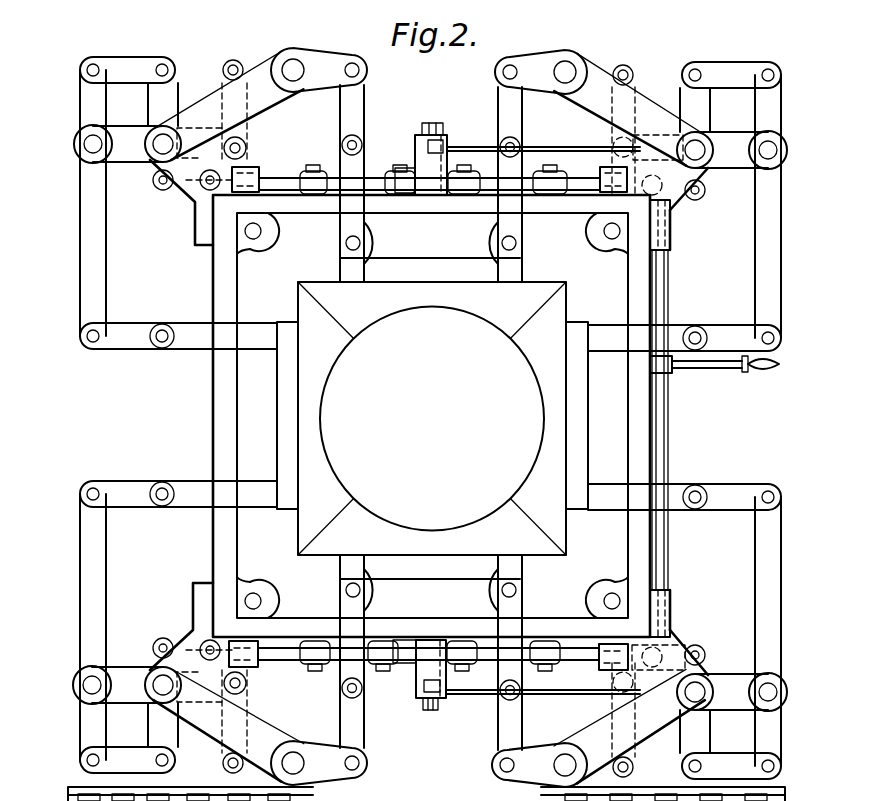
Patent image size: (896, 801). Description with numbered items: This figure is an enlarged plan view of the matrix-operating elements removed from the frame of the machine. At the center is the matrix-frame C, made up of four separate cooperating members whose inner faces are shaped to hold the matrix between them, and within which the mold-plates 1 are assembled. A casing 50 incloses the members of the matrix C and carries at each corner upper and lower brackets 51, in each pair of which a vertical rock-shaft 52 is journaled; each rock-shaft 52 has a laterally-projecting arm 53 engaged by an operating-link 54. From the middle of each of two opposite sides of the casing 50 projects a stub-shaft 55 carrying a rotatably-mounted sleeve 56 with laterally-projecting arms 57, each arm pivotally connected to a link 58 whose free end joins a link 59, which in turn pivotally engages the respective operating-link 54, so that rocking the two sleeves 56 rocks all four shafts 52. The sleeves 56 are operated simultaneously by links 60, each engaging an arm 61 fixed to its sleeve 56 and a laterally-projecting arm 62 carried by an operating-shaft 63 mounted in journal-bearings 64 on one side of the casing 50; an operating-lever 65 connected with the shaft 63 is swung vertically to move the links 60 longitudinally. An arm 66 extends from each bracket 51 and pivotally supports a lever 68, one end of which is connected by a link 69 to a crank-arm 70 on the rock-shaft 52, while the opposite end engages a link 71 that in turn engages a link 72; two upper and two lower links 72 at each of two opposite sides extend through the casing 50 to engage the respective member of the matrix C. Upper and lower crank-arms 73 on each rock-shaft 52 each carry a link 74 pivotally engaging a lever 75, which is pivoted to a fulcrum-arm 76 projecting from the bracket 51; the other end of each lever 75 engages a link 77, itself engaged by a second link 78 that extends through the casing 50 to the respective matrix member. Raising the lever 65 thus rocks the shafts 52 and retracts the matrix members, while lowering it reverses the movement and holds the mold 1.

The mold-plate 1 is at (432, 418).
The casing 50 is at (640, 447).
The bracket 51 is at (205, 178).
The rock-shaft 52 is at (186, 690).
The laterally-projecting arm 53 is at (160, 191).
The operating-link 54 is at (86, 145).
The stub-shaft 55 is at (449, 712).
The sleeve 56 is at (428, 160).
The laterally-projecting arm 57 is at (407, 183).
The link 58 is at (338, 197).
The link 59 is at (287, 177).
The link 60 is at (470, 147).
The arm 61 is at (430, 712).
The laterally-projecting arm 62 is at (657, 137).
The operating-shaft 63 is at (668, 462).
The journal-bearing 64 is at (671, 234).
The operating-lever 65 is at (716, 369).
The arm 66 is at (274, 718).
The lever 68 is at (429, 420).
The link 69 is at (223, 765).
The crank-arm 70 is at (247, 148).
The link 71 is at (431, 417).
The link 72 is at (368, 232).
The crank-arm 73 is at (429, 418).
The link 74 is at (426, 429).
The lever 75 is at (80, 210).
The fulcrum-arm 76 is at (430, 418).
The link 77 is at (137, 343).
The link 78 is at (202, 343).
The matrix-frame C is at (441, 432).